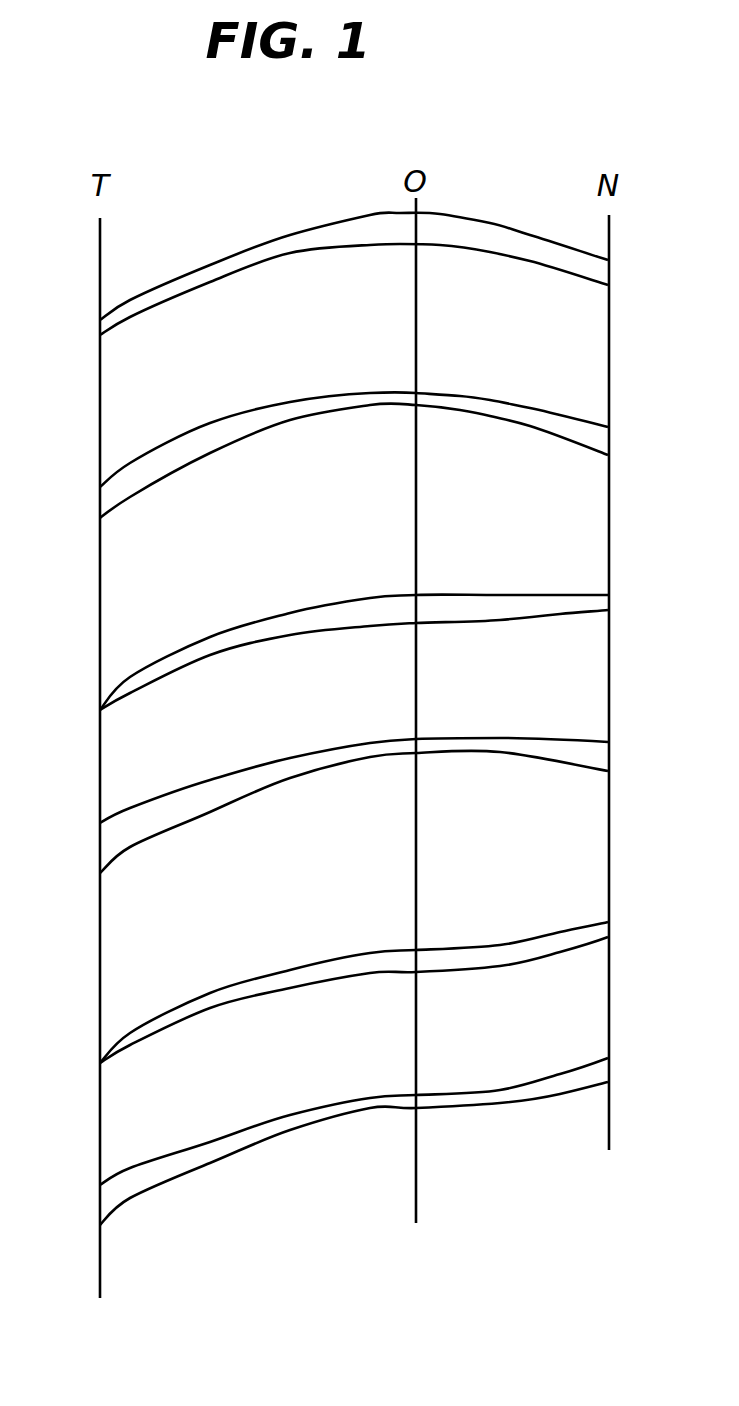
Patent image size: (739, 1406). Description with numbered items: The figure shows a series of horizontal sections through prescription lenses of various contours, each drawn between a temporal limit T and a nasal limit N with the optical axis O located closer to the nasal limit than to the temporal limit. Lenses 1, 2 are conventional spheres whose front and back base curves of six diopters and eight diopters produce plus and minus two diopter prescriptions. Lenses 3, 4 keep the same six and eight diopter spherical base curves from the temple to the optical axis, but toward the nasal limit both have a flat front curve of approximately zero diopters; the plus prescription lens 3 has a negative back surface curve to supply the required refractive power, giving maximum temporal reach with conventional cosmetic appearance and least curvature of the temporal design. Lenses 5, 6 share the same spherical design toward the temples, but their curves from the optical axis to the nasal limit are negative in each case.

The lens 1 is at (331, 281).
The lens 2 is at (331, 459).
The plus Rx lens 3 is at (331, 664).
The lens 4 is at (331, 805).
The lens 5 is at (331, 1003).
The lens 6 is at (331, 1144).